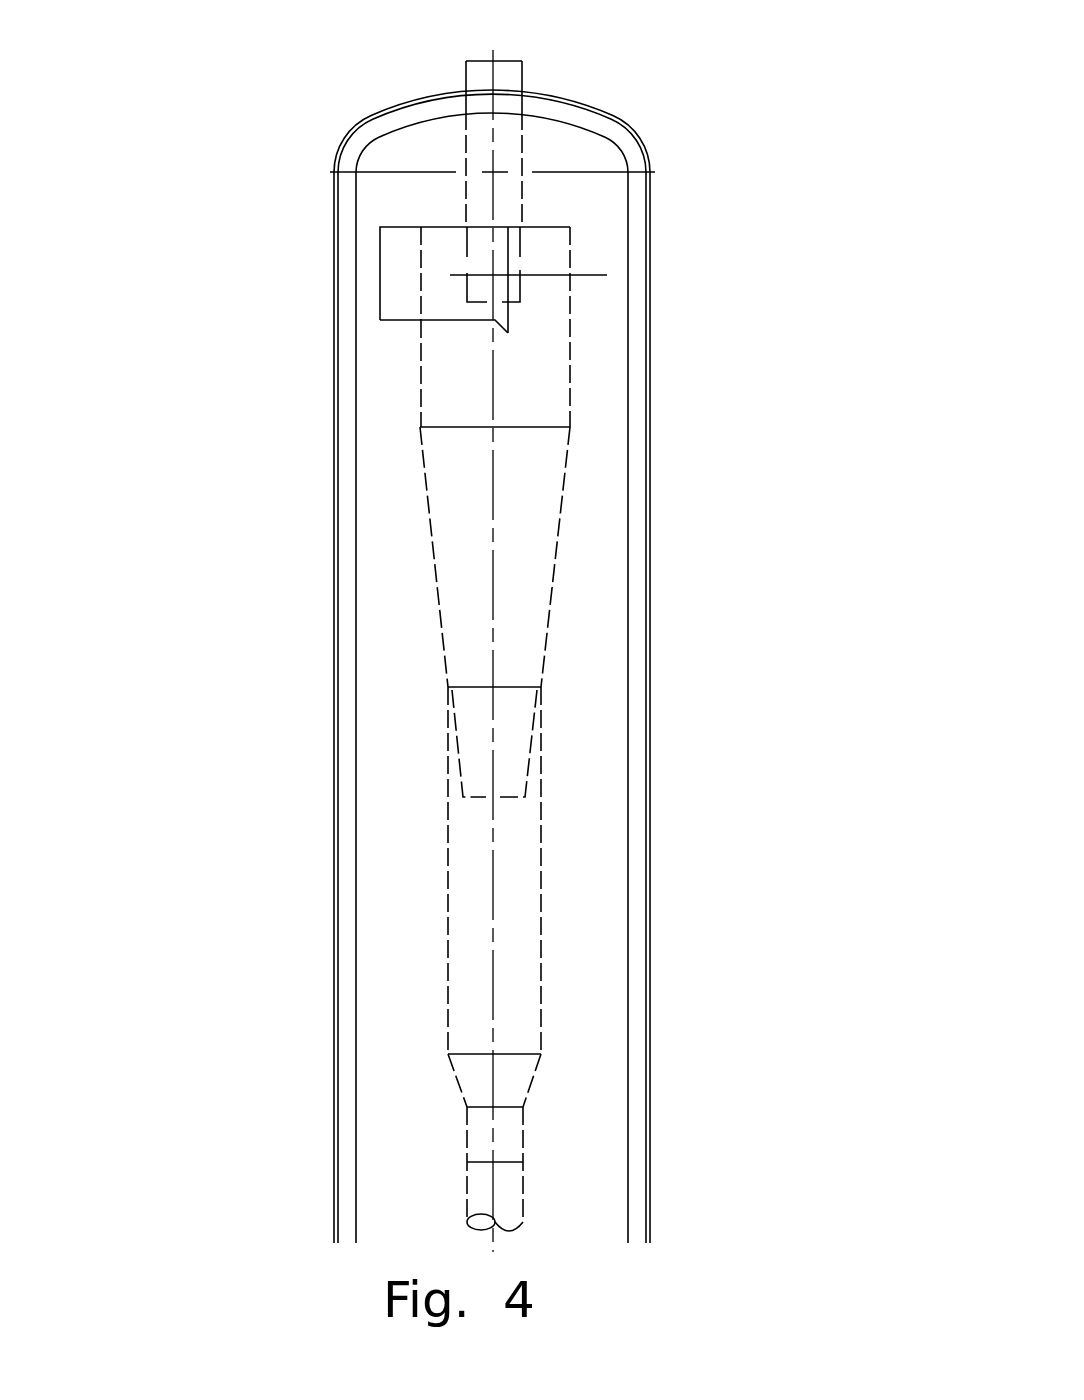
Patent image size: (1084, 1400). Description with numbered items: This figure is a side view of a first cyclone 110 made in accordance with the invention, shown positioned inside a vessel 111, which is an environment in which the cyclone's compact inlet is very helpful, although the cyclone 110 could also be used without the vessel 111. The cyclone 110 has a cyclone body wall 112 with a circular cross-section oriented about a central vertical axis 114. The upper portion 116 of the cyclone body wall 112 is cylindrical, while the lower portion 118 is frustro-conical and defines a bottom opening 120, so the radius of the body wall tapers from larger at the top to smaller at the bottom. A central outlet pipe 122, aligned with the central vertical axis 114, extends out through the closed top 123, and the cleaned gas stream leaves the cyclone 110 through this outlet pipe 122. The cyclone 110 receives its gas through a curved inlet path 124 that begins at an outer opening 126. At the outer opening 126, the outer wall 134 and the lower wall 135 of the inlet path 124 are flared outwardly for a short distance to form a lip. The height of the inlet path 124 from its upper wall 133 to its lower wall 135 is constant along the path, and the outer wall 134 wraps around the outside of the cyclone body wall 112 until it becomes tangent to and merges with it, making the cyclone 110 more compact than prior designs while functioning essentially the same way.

The first cyclone 110 is at (603, 310).
The vessel 111 is at (333, 574).
The cyclone body wall 112 is at (563, 485).
The central vertical axis 114 is at (495, 735).
The upper portion 116 is at (418, 380).
The lower portion 118 is at (440, 607).
The bottom opening 120 is at (508, 798).
The central outlet pipe 122 is at (466, 78).
The closed top 123 is at (547, 227).
The curved inlet path 124 is at (433, 259).
The outer opening 126 is at (495, 290).
The upper wall 133 is at (443, 227).
The outer wall 134 is at (408, 298).
The lower wall 135 is at (440, 323).